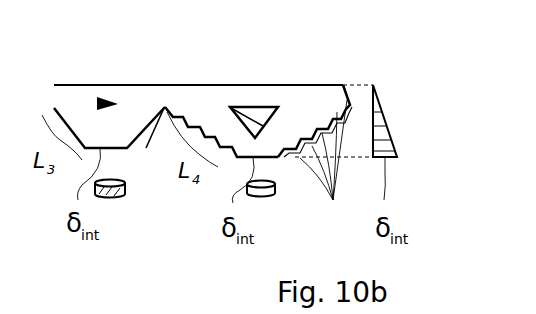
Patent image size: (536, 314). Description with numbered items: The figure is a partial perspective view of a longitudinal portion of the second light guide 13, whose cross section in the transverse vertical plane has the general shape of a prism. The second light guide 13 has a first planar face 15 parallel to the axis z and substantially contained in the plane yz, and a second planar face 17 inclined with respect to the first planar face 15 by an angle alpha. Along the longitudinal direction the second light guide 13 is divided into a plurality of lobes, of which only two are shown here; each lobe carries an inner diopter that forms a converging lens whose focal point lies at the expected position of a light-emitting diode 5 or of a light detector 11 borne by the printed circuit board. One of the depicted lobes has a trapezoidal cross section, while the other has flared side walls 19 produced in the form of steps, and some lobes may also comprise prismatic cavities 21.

The second light guide 13 is at (213, 121).
The first planar face 15 is at (95, 105).
The prismatic cavities 21 is at (263, 107).
The second planar face 17 is at (387, 107).
The light detector 11 is at (107, 196).
The light source 5 is at (262, 194).
The flared side walls 19 is at (333, 200).